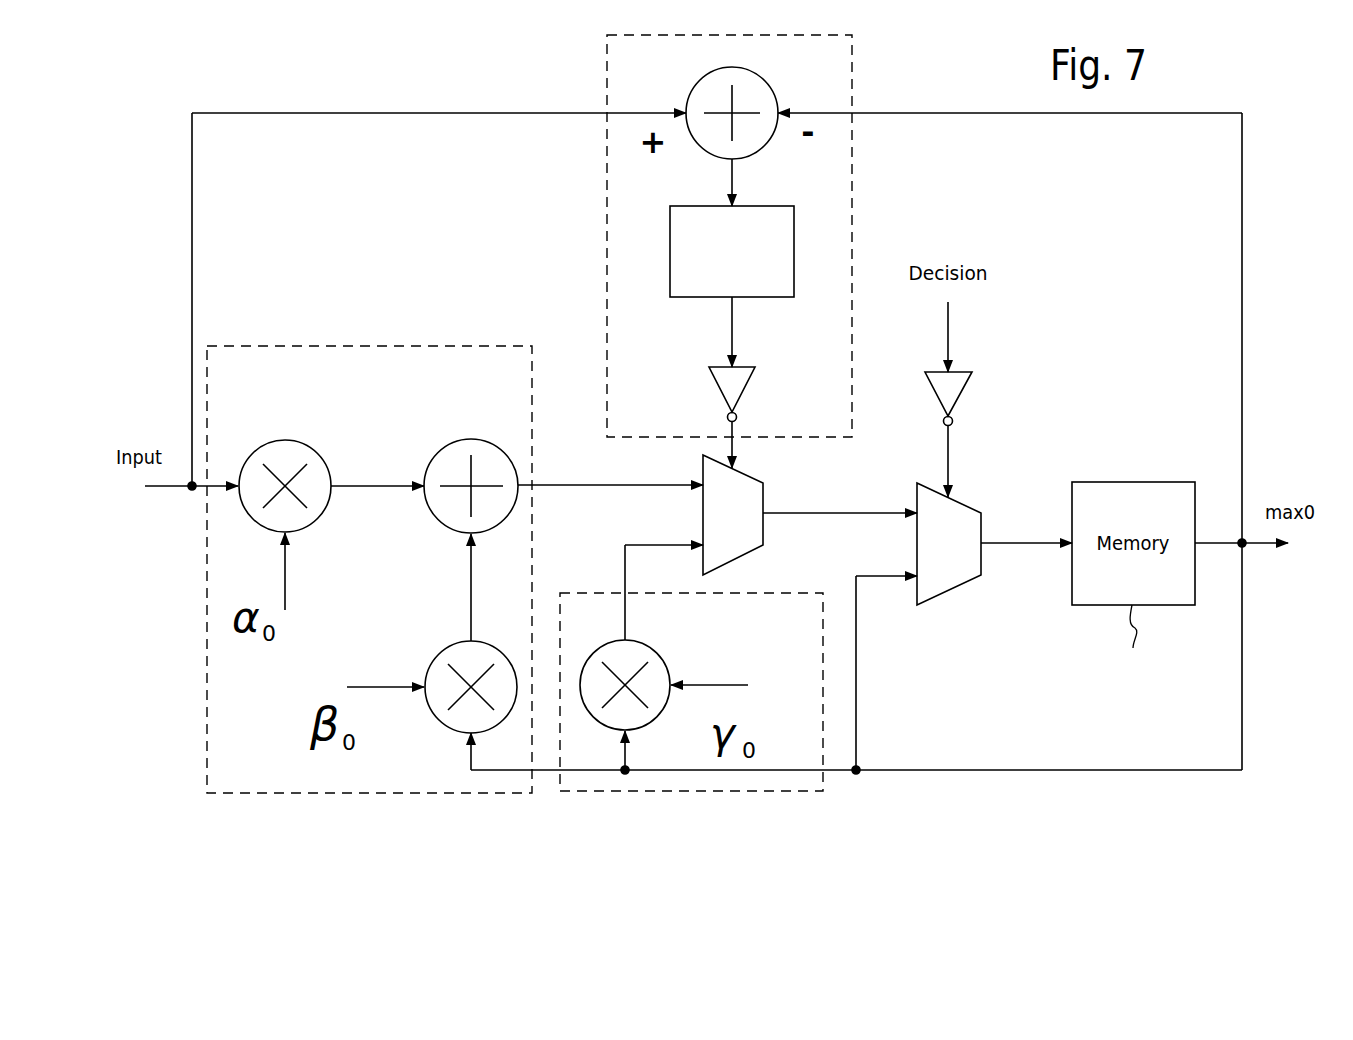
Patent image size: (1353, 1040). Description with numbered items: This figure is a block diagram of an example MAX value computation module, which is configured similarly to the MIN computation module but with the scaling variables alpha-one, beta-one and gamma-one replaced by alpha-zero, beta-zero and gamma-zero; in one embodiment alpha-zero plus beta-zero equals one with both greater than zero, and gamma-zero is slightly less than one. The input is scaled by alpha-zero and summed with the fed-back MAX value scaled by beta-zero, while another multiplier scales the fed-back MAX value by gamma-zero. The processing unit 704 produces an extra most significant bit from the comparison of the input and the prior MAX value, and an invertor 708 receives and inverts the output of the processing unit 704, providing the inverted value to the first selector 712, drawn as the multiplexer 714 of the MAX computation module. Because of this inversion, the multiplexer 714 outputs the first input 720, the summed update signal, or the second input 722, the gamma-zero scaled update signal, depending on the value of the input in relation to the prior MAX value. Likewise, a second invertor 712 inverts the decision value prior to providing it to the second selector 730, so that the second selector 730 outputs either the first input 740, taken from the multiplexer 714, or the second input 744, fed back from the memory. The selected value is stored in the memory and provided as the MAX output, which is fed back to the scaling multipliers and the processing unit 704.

The processing unit 704 is at (795, 250).
The invertor 708 is at (722, 391).
The second invertor 712 is at (955, 405).
The multiplexer 714 is at (765, 490).
The first input 720 is at (545, 483).
The second input 722 is at (622, 547).
The second selector 730 is at (968, 508).
The first input 740 is at (885, 510).
The second input 744 is at (882, 570).